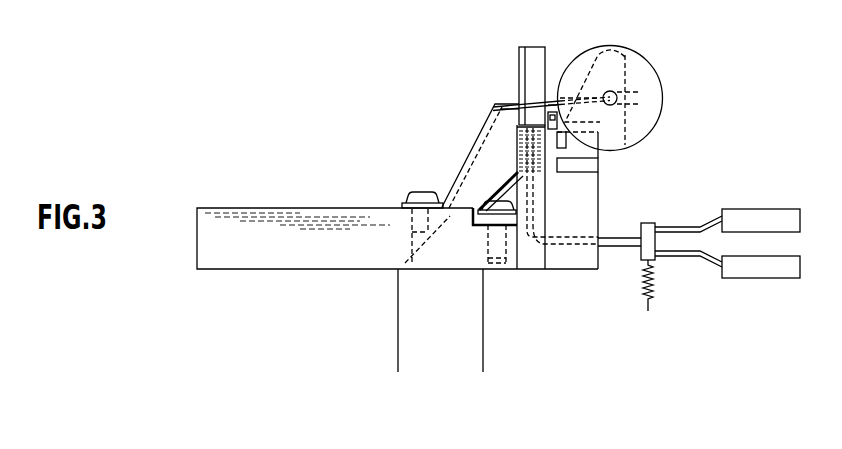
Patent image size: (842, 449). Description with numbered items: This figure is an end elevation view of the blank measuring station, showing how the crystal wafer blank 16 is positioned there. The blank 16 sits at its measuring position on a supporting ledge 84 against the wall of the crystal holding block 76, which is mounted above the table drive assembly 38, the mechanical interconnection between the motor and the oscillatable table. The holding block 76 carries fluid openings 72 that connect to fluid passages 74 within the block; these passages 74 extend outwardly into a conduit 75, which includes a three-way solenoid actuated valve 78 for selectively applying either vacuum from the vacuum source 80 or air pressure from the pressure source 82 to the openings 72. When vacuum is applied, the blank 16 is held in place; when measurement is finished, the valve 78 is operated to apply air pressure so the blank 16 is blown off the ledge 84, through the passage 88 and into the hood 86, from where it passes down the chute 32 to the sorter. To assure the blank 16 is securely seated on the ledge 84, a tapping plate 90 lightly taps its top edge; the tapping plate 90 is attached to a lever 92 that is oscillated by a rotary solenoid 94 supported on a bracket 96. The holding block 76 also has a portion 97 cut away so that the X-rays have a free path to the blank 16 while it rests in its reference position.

The crystal wafer blank 16 is at (517, 120).
The chute 32 is at (484, 349).
The table drive assembly 38 is at (309, 208).
The fluid openings 72 is at (512, 157).
The fluid passages 74 is at (533, 220).
The conduit 75 is at (615, 232).
The crystal holding block 76 is at (531, 262).
The three-way solenoid actuated valve 78 is at (642, 287).
The vacuum source 80 is at (802, 215).
The pressure source 82 is at (803, 267).
The supporting ledge 84 is at (512, 180).
The hood 86 is at (470, 150).
The passage 88 is at (437, 236).
The tapping plate 90 is at (553, 98).
The lever 92 is at (626, 62).
The rotary solenoid 94 is at (663, 100).
The bracket 96 is at (600, 172).
The cut-away portion 97 is at (538, 47).